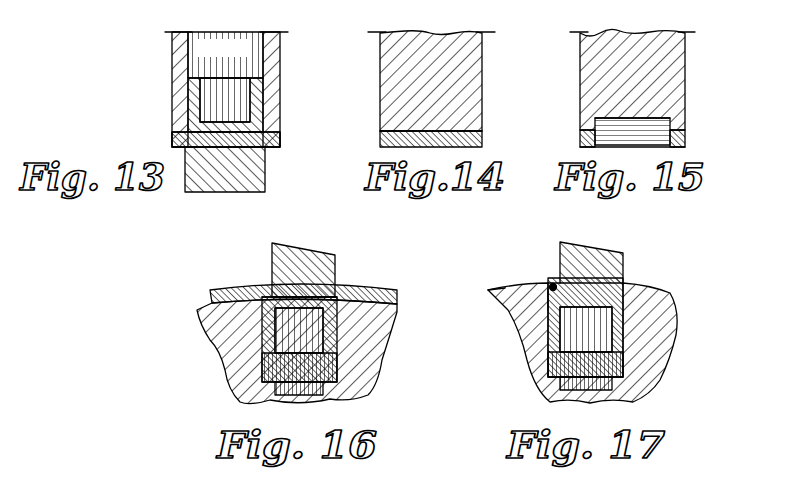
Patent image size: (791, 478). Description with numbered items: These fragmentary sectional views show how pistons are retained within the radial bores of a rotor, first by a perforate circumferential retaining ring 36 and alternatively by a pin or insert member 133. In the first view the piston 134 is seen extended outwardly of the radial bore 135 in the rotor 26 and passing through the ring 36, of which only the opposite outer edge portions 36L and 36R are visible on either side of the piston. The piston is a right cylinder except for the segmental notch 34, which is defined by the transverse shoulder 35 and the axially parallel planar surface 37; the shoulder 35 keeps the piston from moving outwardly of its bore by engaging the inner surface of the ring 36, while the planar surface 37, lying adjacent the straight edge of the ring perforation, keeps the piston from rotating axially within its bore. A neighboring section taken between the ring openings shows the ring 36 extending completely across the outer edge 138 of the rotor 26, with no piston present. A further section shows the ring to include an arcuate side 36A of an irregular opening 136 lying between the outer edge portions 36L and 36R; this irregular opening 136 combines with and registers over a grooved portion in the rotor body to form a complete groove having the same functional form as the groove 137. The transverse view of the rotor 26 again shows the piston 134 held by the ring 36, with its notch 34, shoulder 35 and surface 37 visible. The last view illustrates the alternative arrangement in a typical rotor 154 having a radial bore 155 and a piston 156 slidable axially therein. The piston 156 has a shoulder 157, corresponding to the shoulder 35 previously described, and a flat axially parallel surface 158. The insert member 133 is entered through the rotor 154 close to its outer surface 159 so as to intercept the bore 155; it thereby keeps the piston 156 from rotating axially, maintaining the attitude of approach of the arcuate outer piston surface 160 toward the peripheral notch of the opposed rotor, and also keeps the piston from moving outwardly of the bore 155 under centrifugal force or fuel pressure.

In FIG. 13, the rotor 26 is at (179, 50).
In FIG. 14, the rotor 26 is at (431, 42).
In FIG. 15, the rotor 26 is at (660, 70).
In FIG. 16, the rotor 26 is at (233, 342).
In FIG. 16, the segmental notch 34 is at (262, 275).
In FIG. 16, the transverse shoulder 35 is at (240, 285).
In FIG. 14, the retaining ring 36 is at (482, 140).
In FIG. 16, the retaining ring 36 is at (215, 297).
In FIG. 13, the left outer edge portion of ring 36L is at (173, 139).
In FIG. 15, the left outer edge portion of ring 36L is at (583, 136).
In FIG. 13, the right outer edge portion of ring 36R is at (278, 145).
In FIG. 15, the right outer edge portion of ring 36R is at (680, 134).
In FIG. 15, the arcuate side of ring opening 36A is at (667, 120).
In FIG. 16, the axially parallel planar surface 37 is at (260, 275).
In FIG. 17, the insert member 133 is at (552, 284).
In FIG. 13, the piston 134 is at (240, 179).
In FIG. 16, the piston 134 is at (298, 260).
In FIG. 13, the radial bore 135 is at (252, 47).
In FIG. 15, the irregular opening 136 is at (676, 107).
In FIG. 15, the groove 137 is at (632, 143).
In FIG. 14, the outer edge of rotor 138 is at (432, 130).
In FIG. 17, the rotor 154 is at (665, 323).
In FIG. 17, the radial bore 155 is at (593, 362).
In FIG. 17, the piston 156 is at (605, 292).
In FIG. 17, the shoulder 157 is at (548, 300).
In FIG. 17, the flat axially parallel surface 158 is at (534, 256).
In FIG. 17, the outer surface of rotor 159 is at (505, 288).
In FIG. 17, the arcuate outer piston surface 160 is at (595, 245).